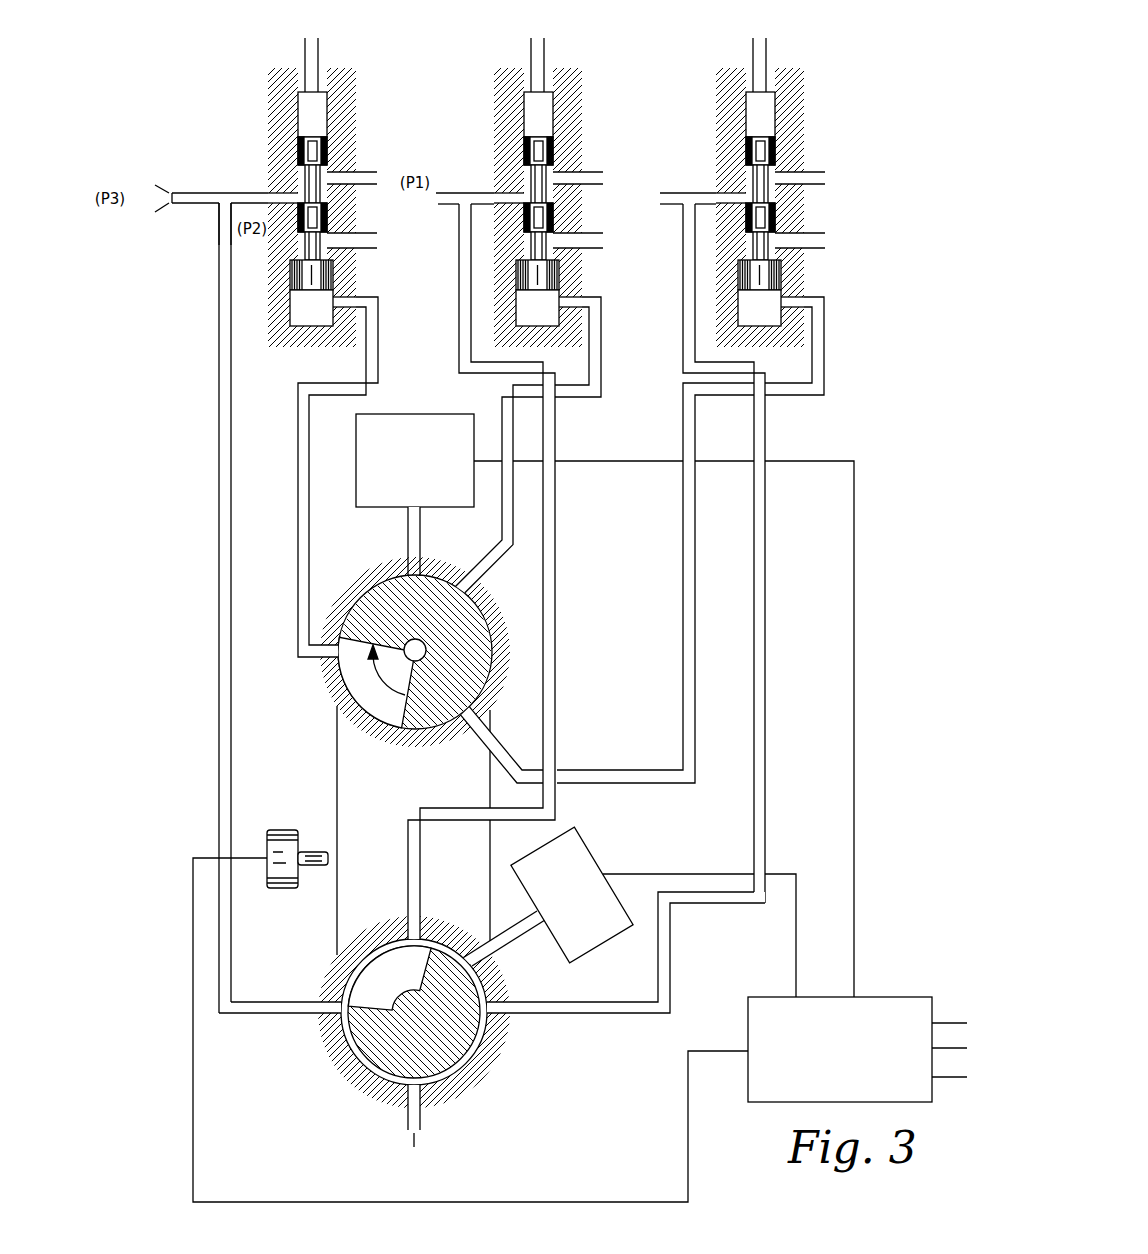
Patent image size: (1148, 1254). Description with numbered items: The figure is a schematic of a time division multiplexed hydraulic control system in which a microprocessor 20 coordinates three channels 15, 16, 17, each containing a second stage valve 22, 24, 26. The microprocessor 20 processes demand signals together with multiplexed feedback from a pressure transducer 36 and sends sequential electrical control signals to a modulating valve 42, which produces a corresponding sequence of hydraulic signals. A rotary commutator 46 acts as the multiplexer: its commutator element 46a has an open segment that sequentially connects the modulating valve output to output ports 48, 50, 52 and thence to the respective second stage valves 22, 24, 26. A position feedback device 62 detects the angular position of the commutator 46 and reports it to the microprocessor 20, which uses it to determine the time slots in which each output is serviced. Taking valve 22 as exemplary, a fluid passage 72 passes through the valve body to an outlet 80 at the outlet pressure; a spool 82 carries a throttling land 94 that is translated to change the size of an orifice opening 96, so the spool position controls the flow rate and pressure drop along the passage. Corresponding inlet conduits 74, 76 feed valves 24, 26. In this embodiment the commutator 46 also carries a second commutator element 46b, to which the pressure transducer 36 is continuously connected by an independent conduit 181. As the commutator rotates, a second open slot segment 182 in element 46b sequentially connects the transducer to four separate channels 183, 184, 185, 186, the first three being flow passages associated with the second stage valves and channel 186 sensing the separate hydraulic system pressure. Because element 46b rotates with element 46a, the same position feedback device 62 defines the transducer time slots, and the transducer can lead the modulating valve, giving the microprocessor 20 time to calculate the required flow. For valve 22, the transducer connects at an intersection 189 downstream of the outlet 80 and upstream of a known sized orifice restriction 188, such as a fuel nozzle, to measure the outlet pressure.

The channel 15 is at (248, 491).
The channel 16 is at (612, 498).
The channel 17 is at (803, 495).
The microprocessor 20 is at (827, 1086).
The second stage valve 22 is at (383, 92).
The second stage valve 24 is at (604, 98).
The second stage valve 26 is at (830, 98).
The pressure transducer 36 is at (571, 895).
The modulating valve 42 is at (403, 441).
The rotary commutator 46 is at (338, 807).
The commutator element 46a is at (368, 603).
The second commutator element 46b is at (456, 1035).
The output port 48 is at (326, 648).
The output port 50 is at (476, 570).
The output port 52 is at (478, 730).
The position feedback device 62 is at (284, 829).
The fluid passage 72 is at (176, 188).
The inlet conduit 74 is at (483, 192).
The inlet conduit 76 is at (700, 192).
The outlet 80 is at (280, 200).
The spool 82 is at (303, 152).
The throttling land 94 is at (318, 215).
The orifice opening 96 is at (298, 197).
The independent conduit 181 is at (508, 944).
The second open slot segment 182 is at (385, 974).
The flow passage 183 is at (268, 1058).
The flow passage 184 is at (440, 869).
The flow passage 185 is at (580, 1058).
The channel 186 is at (452, 1142).
The orifice restriction 188 is at (168, 204).
The intersection 189 is at (216, 206).